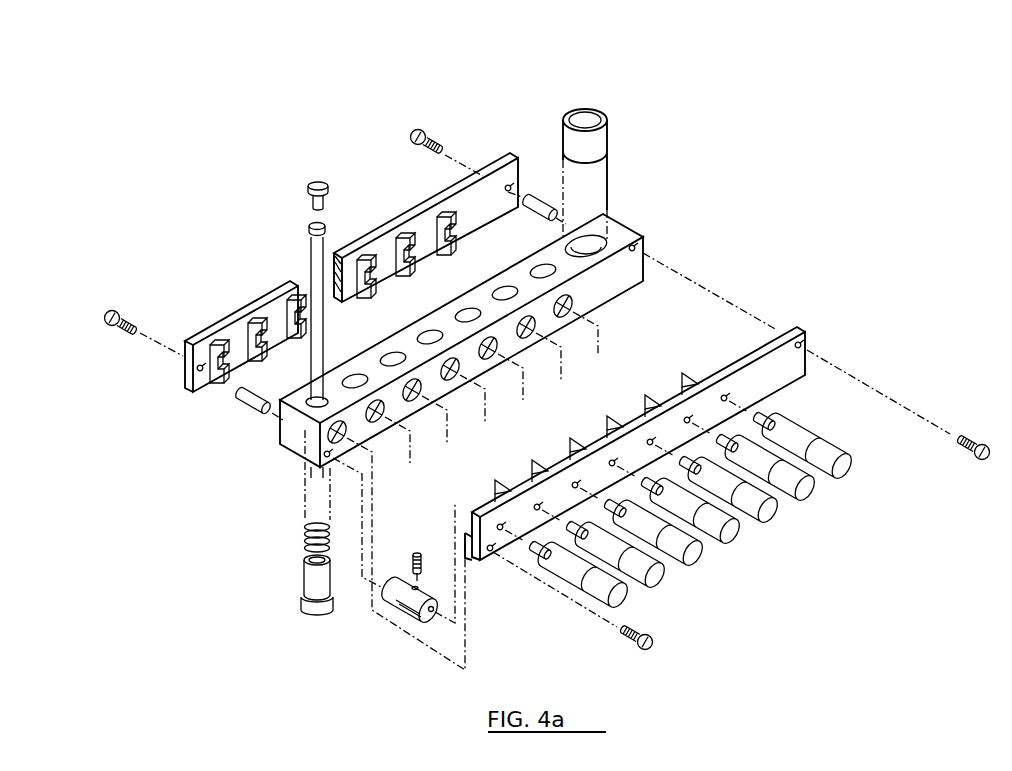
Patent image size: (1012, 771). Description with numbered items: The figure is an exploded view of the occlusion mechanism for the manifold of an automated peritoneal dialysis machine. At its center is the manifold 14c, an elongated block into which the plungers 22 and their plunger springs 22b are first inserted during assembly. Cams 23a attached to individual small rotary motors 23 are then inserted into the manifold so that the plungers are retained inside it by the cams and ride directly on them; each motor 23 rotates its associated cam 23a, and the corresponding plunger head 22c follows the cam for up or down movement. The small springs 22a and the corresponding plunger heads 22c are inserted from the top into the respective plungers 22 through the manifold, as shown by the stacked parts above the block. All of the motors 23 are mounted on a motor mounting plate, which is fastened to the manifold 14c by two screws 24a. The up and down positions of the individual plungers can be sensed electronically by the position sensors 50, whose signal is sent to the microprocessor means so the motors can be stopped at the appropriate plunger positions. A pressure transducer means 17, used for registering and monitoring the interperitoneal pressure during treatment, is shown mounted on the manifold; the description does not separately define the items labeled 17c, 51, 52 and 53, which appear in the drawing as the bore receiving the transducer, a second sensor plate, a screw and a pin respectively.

The manifold 14c is at (640, 233).
The pressure transducer means 17 is at (600, 140).
The bore in block 17c is at (593, 246).
The plunger 22 is at (304, 583).
The small spring 22a is at (324, 226).
The plunger spring 22b is at (305, 535).
The plunger head 22c is at (317, 182).
The motor 23 is at (810, 492).
The cam 23a is at (390, 598).
The screw 24a is at (968, 440).
The position sensor 50 is at (222, 348).
The clip plate 51 is at (498, 163).
The screw 52 is at (112, 310).
The pin 53 is at (238, 400).